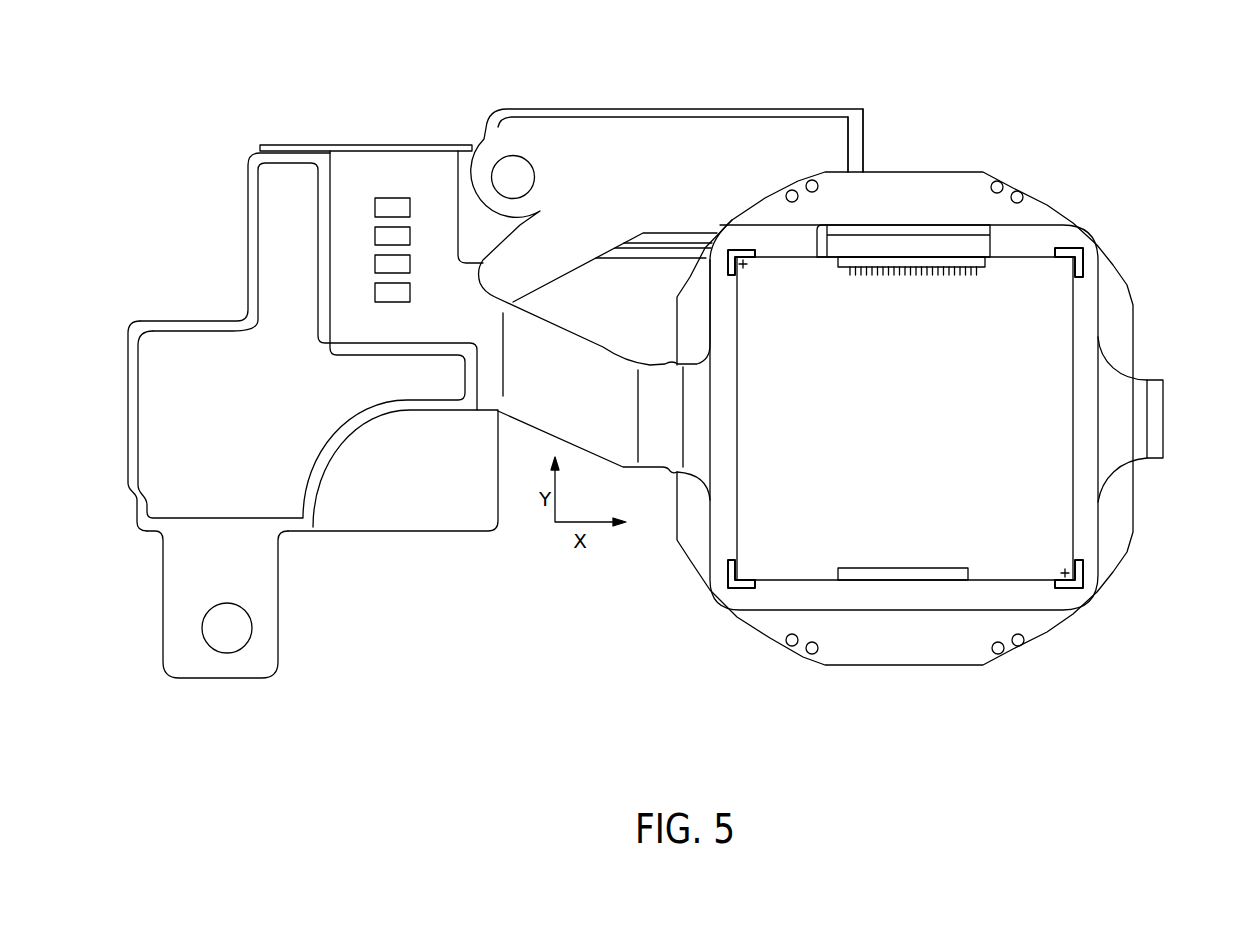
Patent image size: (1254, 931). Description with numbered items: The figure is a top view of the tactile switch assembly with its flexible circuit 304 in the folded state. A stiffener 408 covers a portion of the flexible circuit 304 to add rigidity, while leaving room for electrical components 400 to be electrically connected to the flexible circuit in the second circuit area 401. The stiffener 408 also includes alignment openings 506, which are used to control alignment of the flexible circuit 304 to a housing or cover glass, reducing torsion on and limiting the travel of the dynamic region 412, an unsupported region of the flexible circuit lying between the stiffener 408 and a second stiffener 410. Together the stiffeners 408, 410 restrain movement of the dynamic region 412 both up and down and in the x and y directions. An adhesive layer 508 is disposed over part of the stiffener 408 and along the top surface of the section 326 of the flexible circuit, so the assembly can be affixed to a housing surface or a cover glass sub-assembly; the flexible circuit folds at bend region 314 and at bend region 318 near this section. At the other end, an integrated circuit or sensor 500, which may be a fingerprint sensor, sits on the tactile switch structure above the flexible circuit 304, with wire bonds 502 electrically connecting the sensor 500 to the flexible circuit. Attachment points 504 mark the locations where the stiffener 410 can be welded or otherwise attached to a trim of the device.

The flexible circuit 304 is at (354, 205).
The electrical components 400 is at (393, 207).
The second circuit area 401 is at (402, 129).
The alignment openings 506 is at (243, 629).
The section of the flexible circuit 326 is at (662, 147).
The attachment points 504 is at (812, 180).
The bend region 314 is at (862, 127).
The wire bonds 502 is at (918, 227).
The dynamic region 412 is at (602, 340).
The adhesive layer 508 is at (185, 336).
The bend region 318 is at (1157, 437).
The sensor 500 is at (1050, 532).
The stiffener 408 is at (173, 597).
The stiffener 410 is at (908, 655).